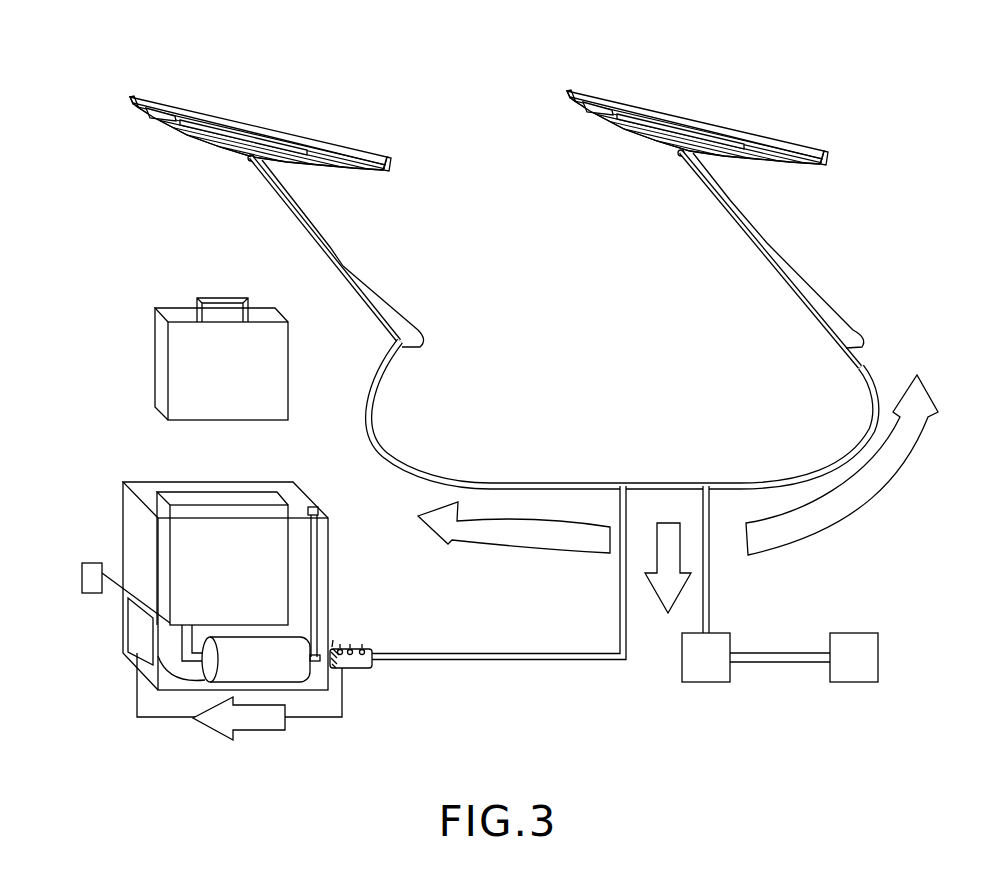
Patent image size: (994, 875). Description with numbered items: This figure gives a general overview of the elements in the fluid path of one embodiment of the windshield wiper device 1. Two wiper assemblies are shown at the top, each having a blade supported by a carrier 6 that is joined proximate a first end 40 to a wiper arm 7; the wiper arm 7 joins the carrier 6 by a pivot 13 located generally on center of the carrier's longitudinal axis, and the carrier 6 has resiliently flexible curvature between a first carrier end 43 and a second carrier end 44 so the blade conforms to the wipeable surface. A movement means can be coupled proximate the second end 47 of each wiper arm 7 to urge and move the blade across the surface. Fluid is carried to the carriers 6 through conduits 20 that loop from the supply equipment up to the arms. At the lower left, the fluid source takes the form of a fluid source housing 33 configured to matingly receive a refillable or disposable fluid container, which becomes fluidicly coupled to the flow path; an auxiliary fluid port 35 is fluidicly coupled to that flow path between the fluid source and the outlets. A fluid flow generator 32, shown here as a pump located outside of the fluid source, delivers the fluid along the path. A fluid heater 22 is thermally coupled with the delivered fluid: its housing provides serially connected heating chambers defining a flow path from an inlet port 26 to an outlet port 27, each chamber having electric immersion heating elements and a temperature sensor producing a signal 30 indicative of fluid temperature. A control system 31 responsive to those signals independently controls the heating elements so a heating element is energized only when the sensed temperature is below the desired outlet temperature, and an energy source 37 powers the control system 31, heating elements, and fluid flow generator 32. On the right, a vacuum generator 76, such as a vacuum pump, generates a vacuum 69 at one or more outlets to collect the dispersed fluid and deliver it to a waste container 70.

The wiper system 1 is at (853, 27).
The carrier 6 is at (387, 163).
The wiper arm 7 is at (581, 260).
The pivot 13 is at (240, 157).
The conduit 20 is at (870, 365).
The fluid heater 22 is at (353, 670).
The inlet port 26 is at (332, 647).
The outlet port 27 is at (383, 653).
The signal 30 is at (239, 718).
The control system 31 is at (128, 632).
The fluid flow generator 32 is at (219, 678).
The fluid source housing 33 is at (130, 540).
The auxiliary fluid port 35 is at (318, 510).
The energy source 37 is at (82, 575).
The first end 40 is at (282, 180).
The first carrier end 43 is at (385, 165).
The second carrier end 44 is at (130, 97).
The second end 47 is at (423, 337).
The vacuum 69 is at (668, 568).
The waste container 70 is at (756, 657).
The vacuum generator 76 is at (854, 657).